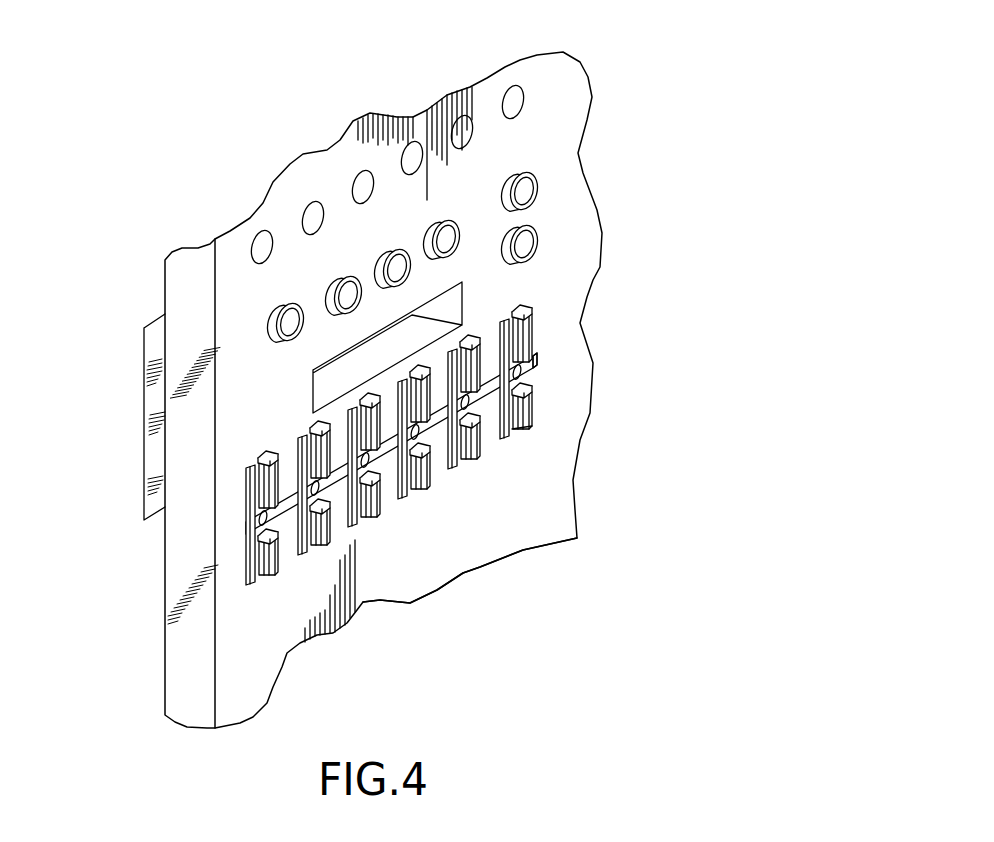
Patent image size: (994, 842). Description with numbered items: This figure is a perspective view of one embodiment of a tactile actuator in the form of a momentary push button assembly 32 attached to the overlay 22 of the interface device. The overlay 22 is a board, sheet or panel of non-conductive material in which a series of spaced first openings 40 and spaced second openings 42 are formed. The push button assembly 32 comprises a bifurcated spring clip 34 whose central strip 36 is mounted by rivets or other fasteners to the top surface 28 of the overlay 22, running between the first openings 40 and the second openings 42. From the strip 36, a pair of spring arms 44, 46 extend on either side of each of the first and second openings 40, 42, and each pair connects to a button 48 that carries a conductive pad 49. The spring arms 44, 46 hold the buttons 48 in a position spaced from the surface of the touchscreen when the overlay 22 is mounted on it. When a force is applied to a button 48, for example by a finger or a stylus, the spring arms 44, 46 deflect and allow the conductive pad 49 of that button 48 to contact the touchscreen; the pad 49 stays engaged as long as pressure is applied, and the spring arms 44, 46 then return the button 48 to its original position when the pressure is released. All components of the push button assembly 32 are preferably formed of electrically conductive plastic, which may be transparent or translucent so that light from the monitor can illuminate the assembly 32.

The overlay 22 is at (398, 375).
The top surface 28 is at (470, 566).
The push button assembly 32 is at (382, 457).
The bifurcated spring clip 34 is at (581, 325).
The central strip 36 is at (363, 365).
The first openings 40 is at (363, 354).
The second openings 42 is at (562, 471).
The spring arm 44 is at (305, 516).
The spring arm 46 is at (322, 510).
The button 48 is at (395, 475).
The conductive pad 49 is at (448, 517).